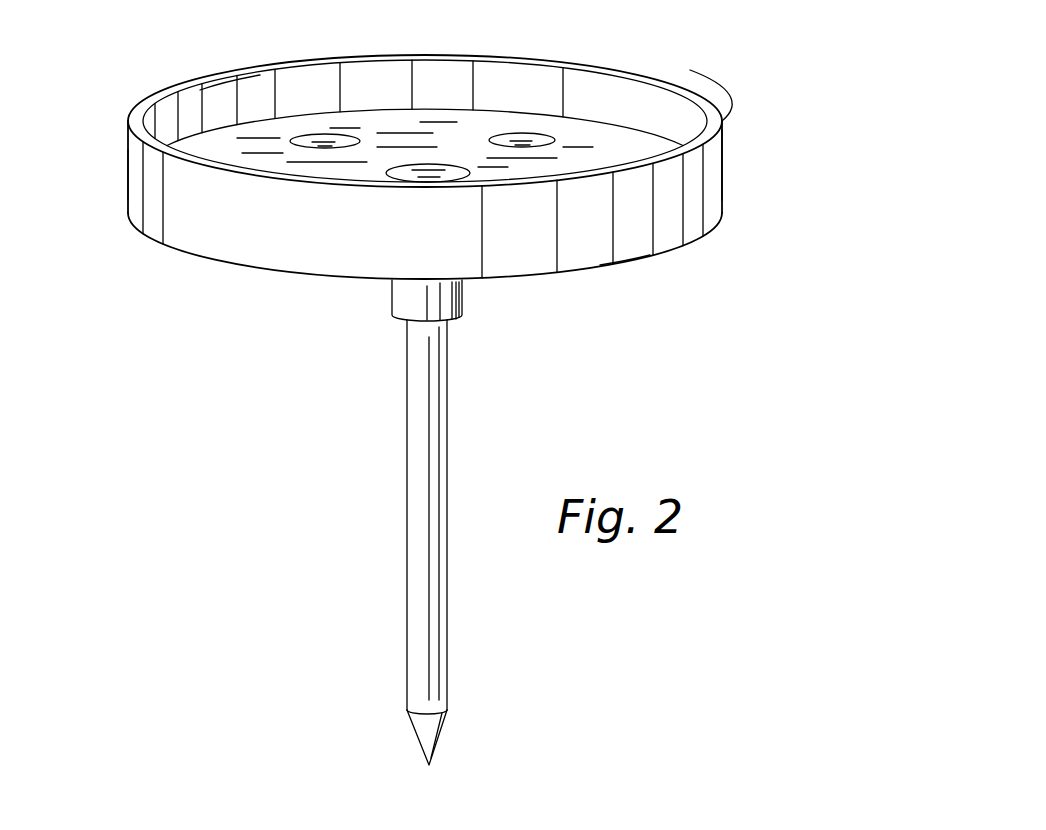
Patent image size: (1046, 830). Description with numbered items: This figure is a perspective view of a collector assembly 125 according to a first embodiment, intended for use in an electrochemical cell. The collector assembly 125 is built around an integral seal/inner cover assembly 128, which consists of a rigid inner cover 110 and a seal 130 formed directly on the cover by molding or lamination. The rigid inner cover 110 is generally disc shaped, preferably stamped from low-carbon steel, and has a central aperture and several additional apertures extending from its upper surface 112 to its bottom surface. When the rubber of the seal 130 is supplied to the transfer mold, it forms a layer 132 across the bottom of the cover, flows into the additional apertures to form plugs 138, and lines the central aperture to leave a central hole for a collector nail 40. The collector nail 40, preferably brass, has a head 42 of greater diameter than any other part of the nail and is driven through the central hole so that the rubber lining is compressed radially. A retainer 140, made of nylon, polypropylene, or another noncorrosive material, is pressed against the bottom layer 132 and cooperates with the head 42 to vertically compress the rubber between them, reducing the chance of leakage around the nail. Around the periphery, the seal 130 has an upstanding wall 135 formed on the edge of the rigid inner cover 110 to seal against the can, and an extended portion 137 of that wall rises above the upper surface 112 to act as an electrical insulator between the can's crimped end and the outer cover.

The rigid inner cover 110 is at (600, 132).
The upper surface 112 is at (379, 133).
The collector assembly 125 is at (221, 75).
The integral seal/inner cover assembly 128 is at (112, 207).
The seal 130 is at (240, 235).
The layer 132 is at (623, 257).
The upstanding wall 135 is at (722, 182).
The extended portion 137 is at (710, 113).
The plugs 138 is at (322, 137).
The head 42 is at (433, 172).
The retainer 140 is at (397, 302).
The collector nail 40 is at (417, 620).